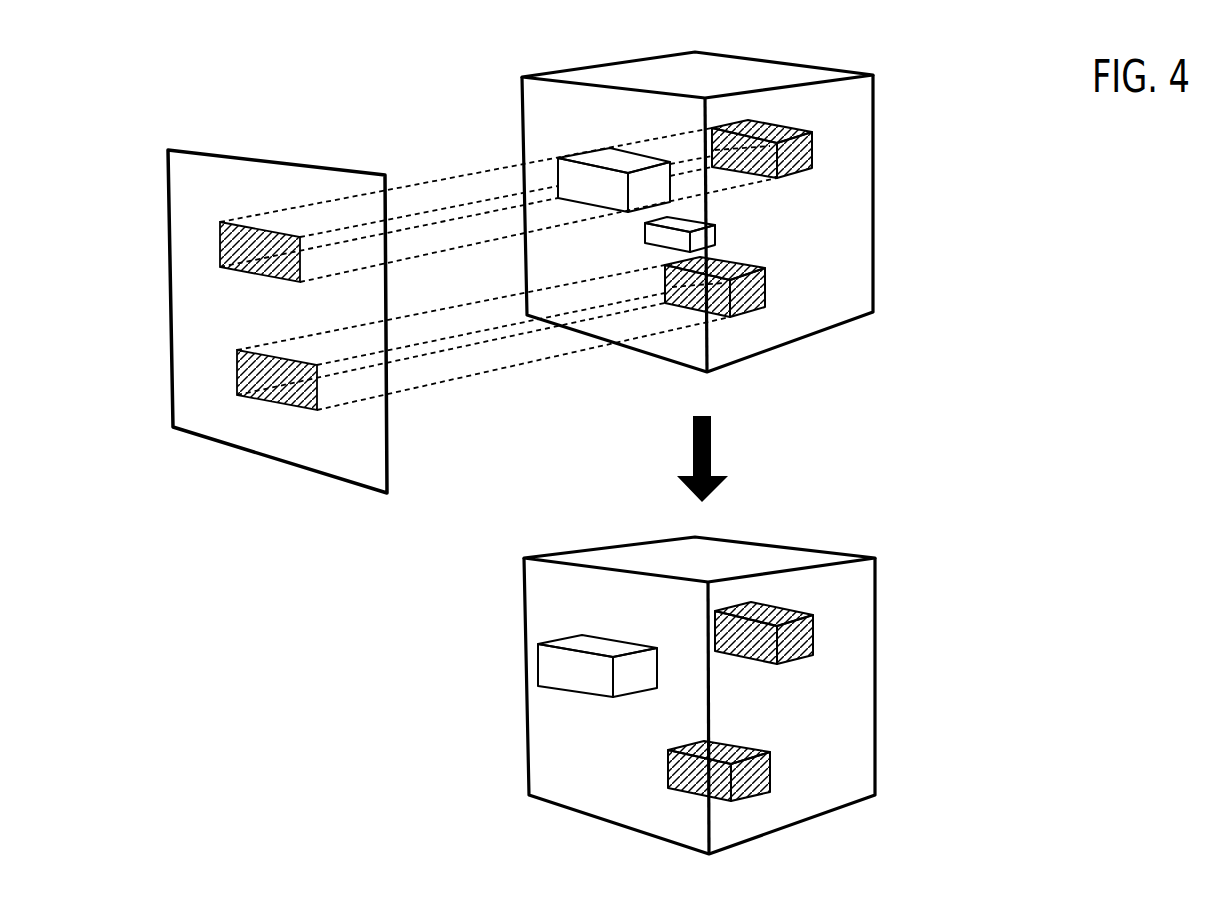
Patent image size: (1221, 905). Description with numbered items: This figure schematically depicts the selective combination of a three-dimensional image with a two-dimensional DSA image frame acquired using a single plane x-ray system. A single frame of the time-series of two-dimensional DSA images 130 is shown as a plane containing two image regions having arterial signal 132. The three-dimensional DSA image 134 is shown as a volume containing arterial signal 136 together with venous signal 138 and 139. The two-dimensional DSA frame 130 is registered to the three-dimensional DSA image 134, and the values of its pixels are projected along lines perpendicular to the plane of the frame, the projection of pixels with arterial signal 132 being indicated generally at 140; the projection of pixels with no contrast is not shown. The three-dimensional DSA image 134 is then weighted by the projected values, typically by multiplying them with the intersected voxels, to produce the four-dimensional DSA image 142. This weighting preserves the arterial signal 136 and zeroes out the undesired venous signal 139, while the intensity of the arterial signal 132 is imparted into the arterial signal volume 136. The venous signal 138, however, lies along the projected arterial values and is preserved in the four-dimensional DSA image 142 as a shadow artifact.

The 2D-DSA image frame 130 is at (225, 153).
The arterial signal 132 is at (222, 263).
The 3D-DSA image 134 is at (875, 97).
The arterial signal 136 is at (800, 127).
The venous signal 138 is at (582, 153).
The venous signal 139 is at (643, 238).
The projection of pixels with arterial signal 140 is at (428, 160).
The 4D-DSA image 142 is at (877, 578).